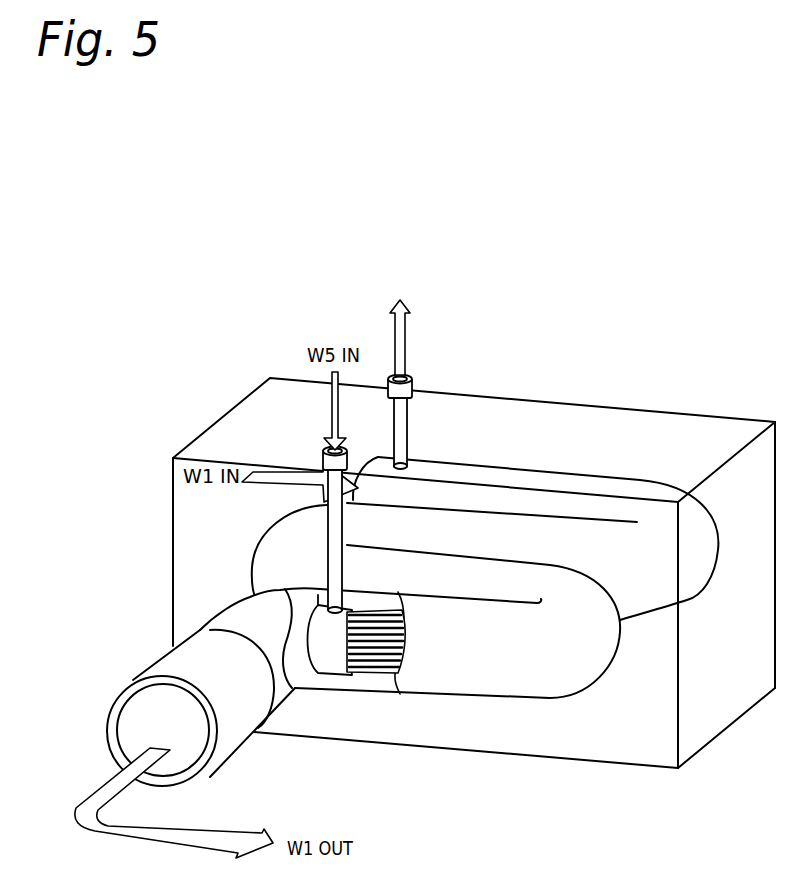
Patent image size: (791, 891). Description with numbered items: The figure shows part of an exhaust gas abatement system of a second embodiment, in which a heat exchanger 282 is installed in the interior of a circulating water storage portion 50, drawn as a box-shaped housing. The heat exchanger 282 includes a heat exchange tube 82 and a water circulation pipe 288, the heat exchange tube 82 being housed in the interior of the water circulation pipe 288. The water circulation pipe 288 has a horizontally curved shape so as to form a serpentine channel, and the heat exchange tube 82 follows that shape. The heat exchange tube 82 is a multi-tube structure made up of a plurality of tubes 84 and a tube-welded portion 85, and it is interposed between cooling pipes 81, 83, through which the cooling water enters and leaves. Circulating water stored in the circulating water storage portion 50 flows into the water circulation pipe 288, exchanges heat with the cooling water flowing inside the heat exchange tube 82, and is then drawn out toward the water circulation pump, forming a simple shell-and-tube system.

The circulating water storage portion 50 is at (528, 400).
The cooling pipe 81 is at (330, 555).
The heat exchange tube 82 is at (354, 703).
The cooling pipe 83 is at (405, 422).
The tubes 84 is at (375, 674).
The tube-welded portion 85 is at (328, 665).
The heat exchanger 282 is at (668, 471).
The water circulation pipe 288 is at (547, 682).